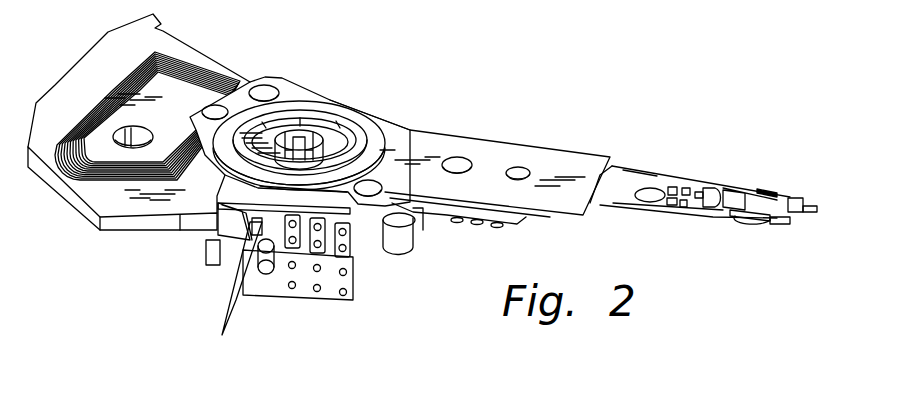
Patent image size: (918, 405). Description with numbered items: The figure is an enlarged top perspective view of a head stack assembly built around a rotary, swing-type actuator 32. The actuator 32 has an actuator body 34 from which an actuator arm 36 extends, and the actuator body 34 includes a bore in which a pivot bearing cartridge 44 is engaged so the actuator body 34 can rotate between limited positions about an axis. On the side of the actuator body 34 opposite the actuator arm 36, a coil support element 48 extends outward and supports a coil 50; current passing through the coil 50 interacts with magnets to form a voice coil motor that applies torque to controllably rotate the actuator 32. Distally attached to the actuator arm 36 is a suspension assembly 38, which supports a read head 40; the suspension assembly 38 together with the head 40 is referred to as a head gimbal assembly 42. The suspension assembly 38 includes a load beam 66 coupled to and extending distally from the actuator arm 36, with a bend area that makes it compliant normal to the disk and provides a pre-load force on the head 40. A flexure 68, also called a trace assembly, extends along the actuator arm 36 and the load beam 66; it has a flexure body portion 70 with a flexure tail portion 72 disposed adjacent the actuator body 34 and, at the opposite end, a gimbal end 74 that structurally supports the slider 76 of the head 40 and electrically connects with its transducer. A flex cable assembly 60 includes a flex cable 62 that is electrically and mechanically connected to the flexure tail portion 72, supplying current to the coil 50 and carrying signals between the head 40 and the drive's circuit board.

The actuator 32 is at (284, 79).
The actuator body 34 is at (322, 90).
The actuator arm 36 is at (450, 137).
The suspension assembly 38 is at (683, 180).
The read head 40 is at (780, 225).
The head gimbal assembly 42 is at (733, 186).
The pivot bearing cartridge 44 is at (340, 146).
The coil support element 48 is at (108, 50).
The coil 50 is at (188, 63).
The flex cable assembly 60 is at (237, 298).
The flex cable 62 is at (228, 323).
The load beam 66 is at (633, 212).
The flexure 68 is at (428, 210).
The flexure body portion 70 is at (515, 216).
The flexure tail portion 72 is at (362, 240).
The gimbal end 74 is at (737, 224).
The slider 76 is at (758, 227).